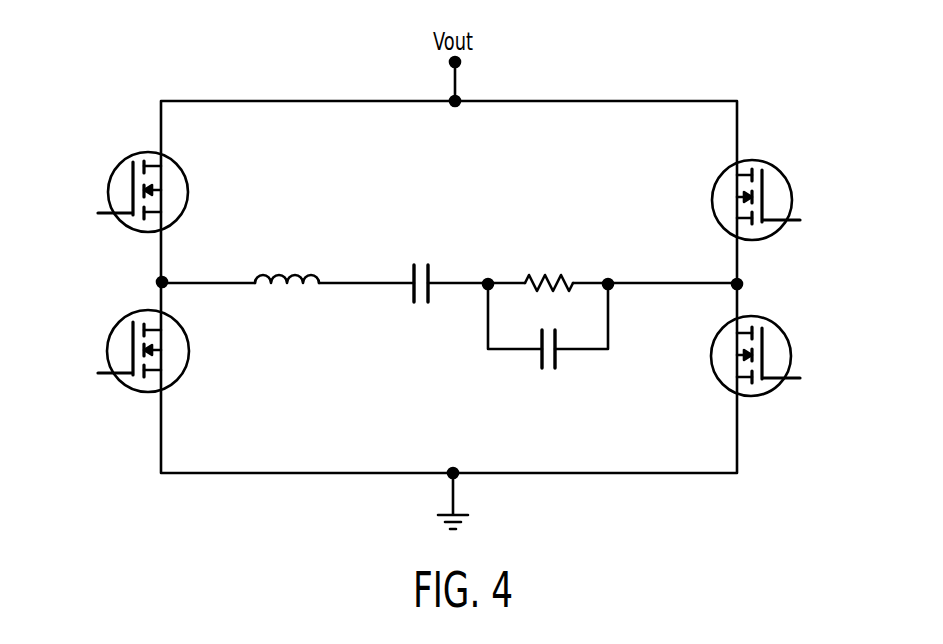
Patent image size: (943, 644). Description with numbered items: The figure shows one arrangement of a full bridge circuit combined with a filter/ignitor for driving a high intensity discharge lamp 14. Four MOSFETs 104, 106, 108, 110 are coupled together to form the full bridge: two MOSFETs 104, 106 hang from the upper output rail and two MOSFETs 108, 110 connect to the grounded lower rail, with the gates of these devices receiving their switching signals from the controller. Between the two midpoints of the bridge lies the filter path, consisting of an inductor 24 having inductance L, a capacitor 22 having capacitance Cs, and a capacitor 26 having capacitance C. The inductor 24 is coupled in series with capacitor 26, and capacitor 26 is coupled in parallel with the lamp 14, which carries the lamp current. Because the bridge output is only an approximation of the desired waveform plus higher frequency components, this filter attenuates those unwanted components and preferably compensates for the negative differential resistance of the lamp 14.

The MOSFET 104 is at (108, 192).
The MOSFET 106 is at (792, 202).
The MOSFET 108 is at (108, 350).
The MOSFET 110 is at (791, 357).
The high intensity discharge lamp 14 is at (533, 278).
The capacitor 22 is at (413, 303).
The inductor 24 is at (303, 286).
The capacitor 26 is at (541, 360).